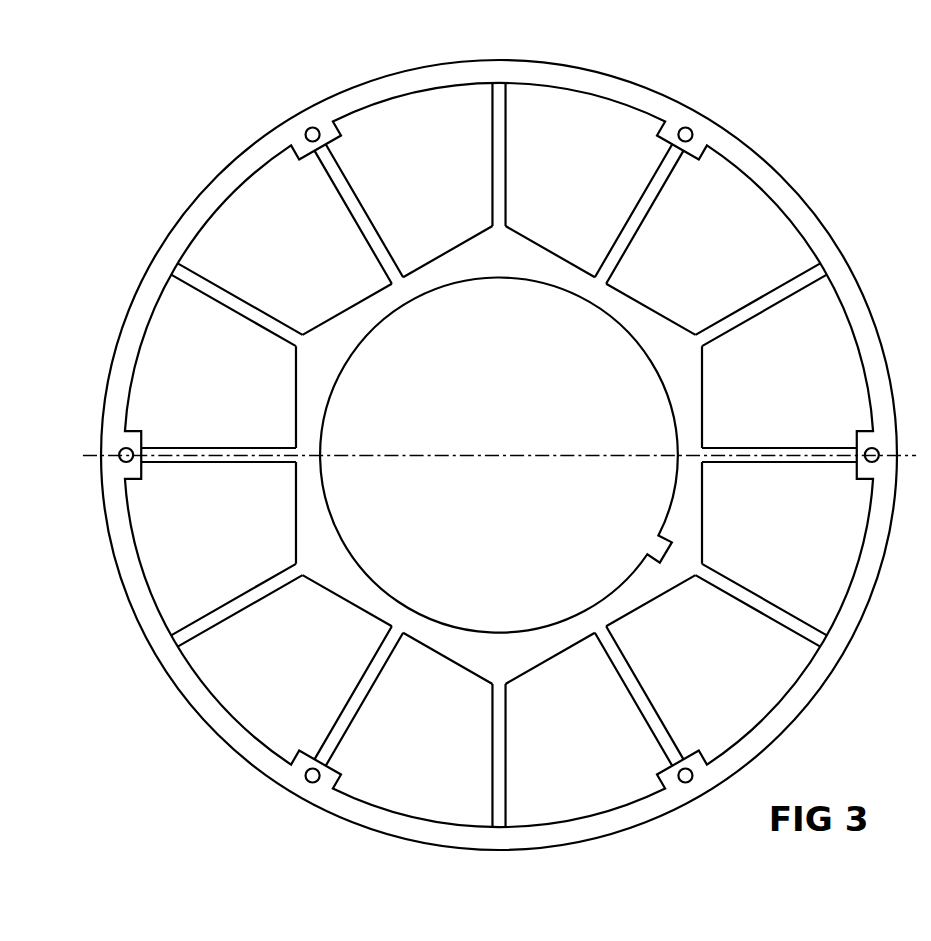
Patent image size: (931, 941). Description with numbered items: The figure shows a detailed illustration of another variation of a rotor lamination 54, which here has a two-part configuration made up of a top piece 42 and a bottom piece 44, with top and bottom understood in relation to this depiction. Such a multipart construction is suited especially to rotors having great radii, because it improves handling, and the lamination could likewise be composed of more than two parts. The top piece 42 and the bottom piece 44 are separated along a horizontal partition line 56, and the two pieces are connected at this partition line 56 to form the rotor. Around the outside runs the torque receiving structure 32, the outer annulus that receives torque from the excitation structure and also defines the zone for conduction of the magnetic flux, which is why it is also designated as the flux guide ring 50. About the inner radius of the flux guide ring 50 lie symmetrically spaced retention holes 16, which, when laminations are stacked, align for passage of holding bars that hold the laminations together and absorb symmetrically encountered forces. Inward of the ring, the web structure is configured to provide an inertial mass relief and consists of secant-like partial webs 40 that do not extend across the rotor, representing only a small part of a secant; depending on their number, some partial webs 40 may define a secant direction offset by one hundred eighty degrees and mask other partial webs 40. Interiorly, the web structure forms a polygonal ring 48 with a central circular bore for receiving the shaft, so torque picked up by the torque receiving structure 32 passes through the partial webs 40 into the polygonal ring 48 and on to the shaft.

The rotor lamination 54 is at (891, 53).
The top piece 42 is at (84, 58).
The bottom piece 44 is at (84, 464).
The torque receiving structure 32 is at (388, 87).
The flux guide ring 50 is at (430, 835).
The retention holes 16 is at (689, 131).
The partition line 56 is at (686, 450).
The secant-like partial webs 40 is at (493, 753).
The polygonal ring 48 is at (560, 638).